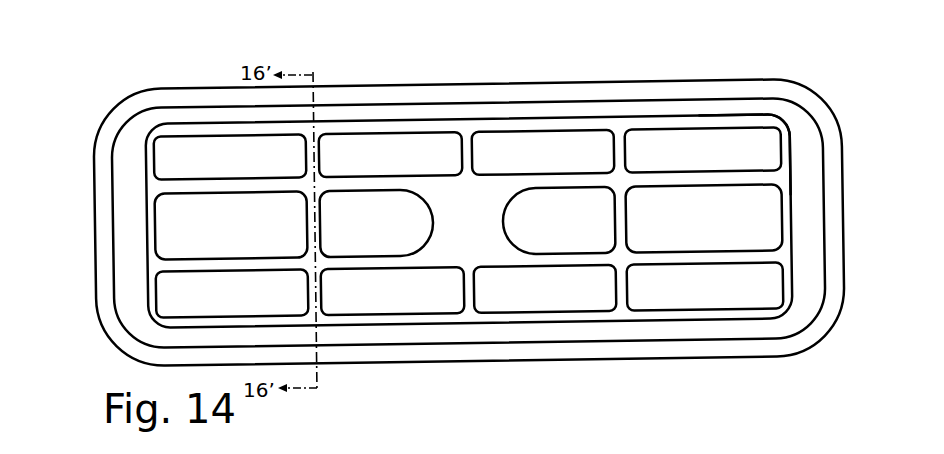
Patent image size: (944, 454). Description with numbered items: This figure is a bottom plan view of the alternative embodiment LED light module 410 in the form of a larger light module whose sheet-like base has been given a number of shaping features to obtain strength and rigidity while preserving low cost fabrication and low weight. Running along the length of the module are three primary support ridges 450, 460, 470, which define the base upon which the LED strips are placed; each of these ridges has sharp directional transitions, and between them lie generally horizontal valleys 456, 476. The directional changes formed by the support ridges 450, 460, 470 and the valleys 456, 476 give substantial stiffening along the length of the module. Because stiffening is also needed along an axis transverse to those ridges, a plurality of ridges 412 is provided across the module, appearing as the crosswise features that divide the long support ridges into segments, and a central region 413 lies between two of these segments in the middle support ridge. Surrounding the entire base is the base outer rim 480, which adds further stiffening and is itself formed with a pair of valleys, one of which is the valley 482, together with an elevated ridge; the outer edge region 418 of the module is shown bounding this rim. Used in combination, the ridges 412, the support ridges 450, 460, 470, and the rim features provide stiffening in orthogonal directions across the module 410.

The grille assembly 410 is at (357, 41).
The ridges 412 is at (463, 140).
The central opening gap 413 is at (489, 241).
The outer frame band 418 is at (582, 93).
The primary support ridge 450 is at (729, 304).
The horizontal valley 456 is at (660, 263).
The primary support ridge 460 is at (729, 237).
The primary support ridge 470 is at (724, 164).
The horizontal valley 476 is at (592, 185).
The base outer rim 480 is at (735, 110).
The valley 482 is at (772, 122).